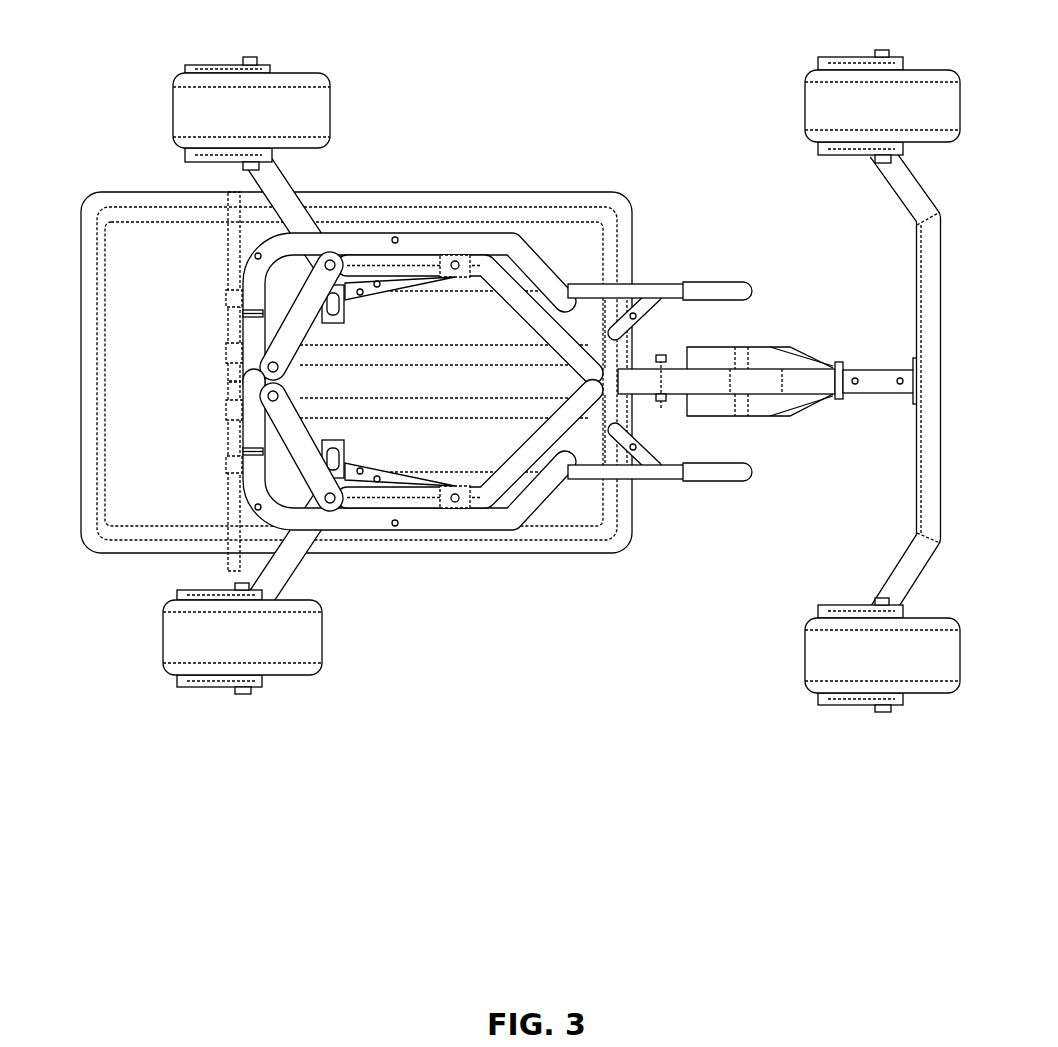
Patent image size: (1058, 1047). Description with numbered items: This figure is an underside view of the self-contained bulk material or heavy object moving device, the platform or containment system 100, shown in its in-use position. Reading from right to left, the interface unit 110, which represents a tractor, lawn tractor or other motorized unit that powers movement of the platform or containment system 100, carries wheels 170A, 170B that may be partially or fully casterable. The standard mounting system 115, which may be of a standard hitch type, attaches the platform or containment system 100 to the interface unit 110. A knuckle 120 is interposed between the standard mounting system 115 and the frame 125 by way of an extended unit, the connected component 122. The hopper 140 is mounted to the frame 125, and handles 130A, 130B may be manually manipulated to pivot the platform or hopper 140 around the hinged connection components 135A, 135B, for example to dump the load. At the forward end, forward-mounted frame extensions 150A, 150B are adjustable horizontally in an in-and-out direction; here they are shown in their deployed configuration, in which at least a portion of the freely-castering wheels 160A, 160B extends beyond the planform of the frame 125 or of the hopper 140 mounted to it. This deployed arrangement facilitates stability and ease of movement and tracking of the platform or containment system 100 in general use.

The platform or containment system 100 is at (82, 60).
The interface unit 110 is at (928, 280).
The standard mounting system 115 is at (876, 375).
The knuckle 120 is at (772, 405).
The connected component 122 is at (668, 357).
The frame 125 is at (442, 383).
The handle 130A is at (718, 282).
The handle 130B is at (718, 483).
The hinged connection component 135A is at (258, 315).
The hinged connection component 135B is at (258, 452).
The hopper 140 is at (356, 372).
The forward-mounted frame extension 150A is at (290, 205).
The forward-mounted frame extension 150B is at (297, 545).
The freely-castering wheel 160A is at (308, 118).
The freely-castering wheel 160B is at (308, 647).
The wheel 170A is at (828, 105).
The wheel 170B is at (825, 658).